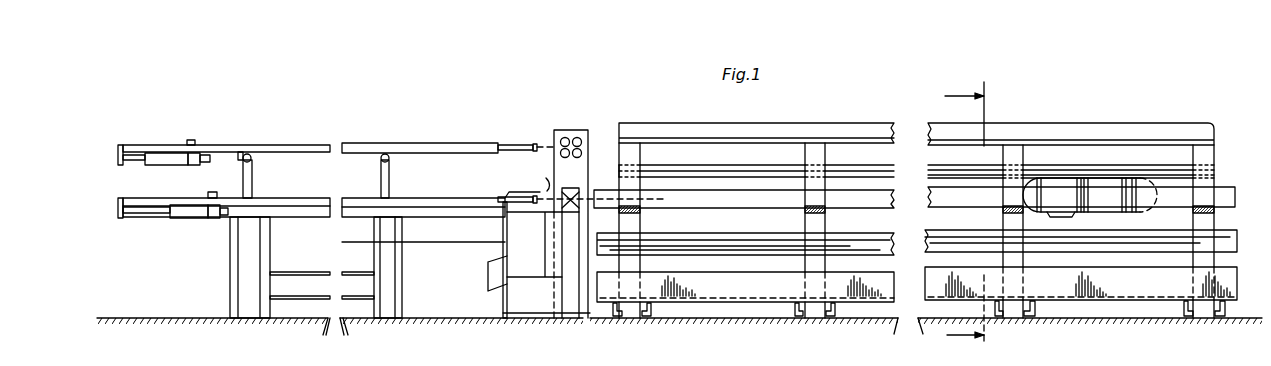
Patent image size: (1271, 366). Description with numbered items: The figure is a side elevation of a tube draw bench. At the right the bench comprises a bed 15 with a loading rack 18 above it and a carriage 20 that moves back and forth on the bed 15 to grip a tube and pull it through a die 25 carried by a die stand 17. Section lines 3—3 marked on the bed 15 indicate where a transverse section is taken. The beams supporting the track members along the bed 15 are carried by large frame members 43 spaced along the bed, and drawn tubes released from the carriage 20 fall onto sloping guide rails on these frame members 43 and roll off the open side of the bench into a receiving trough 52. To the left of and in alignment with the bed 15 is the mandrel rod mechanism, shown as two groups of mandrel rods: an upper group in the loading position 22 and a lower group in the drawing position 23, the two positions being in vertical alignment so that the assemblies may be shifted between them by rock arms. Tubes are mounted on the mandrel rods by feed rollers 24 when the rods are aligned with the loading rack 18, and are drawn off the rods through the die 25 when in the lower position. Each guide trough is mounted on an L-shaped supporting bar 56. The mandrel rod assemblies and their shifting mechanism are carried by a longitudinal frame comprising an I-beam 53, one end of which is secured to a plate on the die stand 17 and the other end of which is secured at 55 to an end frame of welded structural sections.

The section lines 3— 3 is at (964, 217).
The bed 15 is at (1222, 190).
The die stand 17 is at (577, 170).
The loading rack 18 is at (685, 133).
The carriage 20 is at (1090, 208).
The mandrel rod mechanism in loading position 22 is at (348, 150).
The mandrel rod mechanism in drawing position 23 is at (200, 212).
The feed rollers 24 is at (569, 133).
The die 25 is at (575, 190).
The frame members 43 is at (640, 220).
The receiving trough 52 is at (782, 283).
The I-beam 53 is at (450, 232).
The end frame connection 55 is at (258, 312).
The L-shaped supporting bar 56 is at (252, 180).